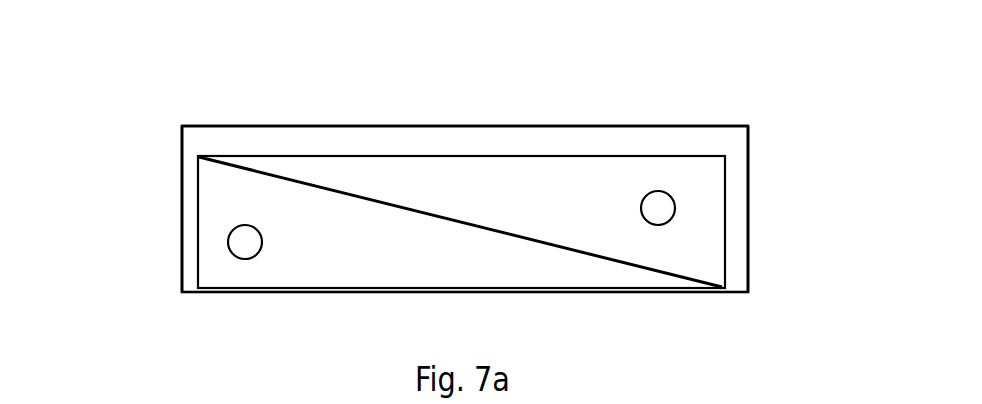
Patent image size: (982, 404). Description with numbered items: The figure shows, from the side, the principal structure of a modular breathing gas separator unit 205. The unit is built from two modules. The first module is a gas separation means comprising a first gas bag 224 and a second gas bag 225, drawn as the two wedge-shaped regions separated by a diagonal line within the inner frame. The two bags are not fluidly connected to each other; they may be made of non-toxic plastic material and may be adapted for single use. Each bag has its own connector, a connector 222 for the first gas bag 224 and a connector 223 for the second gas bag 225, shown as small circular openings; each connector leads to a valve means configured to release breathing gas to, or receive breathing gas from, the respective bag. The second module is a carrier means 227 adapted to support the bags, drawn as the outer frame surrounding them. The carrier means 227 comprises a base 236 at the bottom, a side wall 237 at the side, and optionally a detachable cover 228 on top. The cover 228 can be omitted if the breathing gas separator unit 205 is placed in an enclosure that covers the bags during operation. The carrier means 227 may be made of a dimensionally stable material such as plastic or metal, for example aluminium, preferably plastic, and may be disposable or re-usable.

The modular breathing gas separator unit 205 is at (267, 117).
The connector 222 is at (243, 237).
The connector 223 is at (660, 190).
The first gas bag 224 is at (220, 183).
The second gas bag 225 is at (708, 225).
The carrier means 227 is at (180, 275).
The detachable cover 228 is at (408, 126).
The base 236 is at (387, 290).
The side wall 237 is at (748, 230).